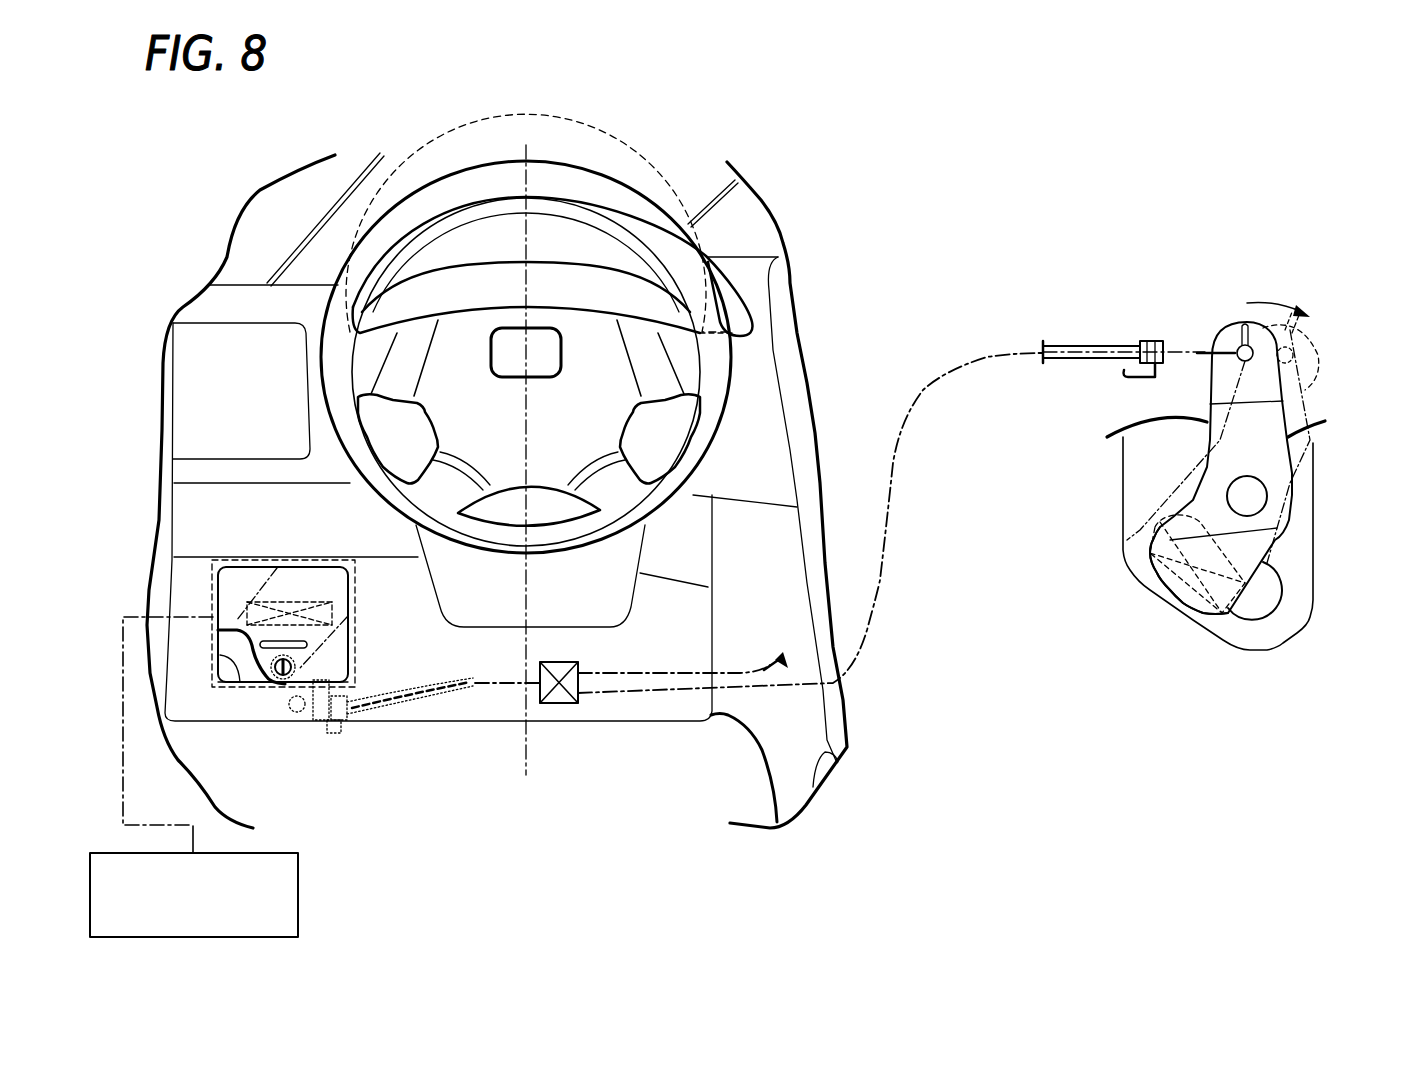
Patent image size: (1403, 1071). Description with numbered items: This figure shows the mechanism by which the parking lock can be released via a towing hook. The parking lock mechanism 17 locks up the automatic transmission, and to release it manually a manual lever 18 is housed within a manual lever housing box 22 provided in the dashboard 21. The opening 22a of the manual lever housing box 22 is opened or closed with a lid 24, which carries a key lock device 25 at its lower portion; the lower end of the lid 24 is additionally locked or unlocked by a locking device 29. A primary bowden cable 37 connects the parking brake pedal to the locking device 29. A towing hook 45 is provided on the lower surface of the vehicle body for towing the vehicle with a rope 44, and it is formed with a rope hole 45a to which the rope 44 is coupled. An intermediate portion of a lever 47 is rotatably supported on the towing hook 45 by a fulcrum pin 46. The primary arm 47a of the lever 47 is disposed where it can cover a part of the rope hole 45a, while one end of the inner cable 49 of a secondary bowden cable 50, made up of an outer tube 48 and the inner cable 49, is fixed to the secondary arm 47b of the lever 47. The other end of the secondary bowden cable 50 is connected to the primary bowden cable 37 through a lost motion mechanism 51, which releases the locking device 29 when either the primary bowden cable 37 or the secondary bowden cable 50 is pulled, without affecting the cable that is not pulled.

The parking lock mechanism 17 is at (298, 893).
The manual lever 18 is at (247, 634).
The dashboard 21 is at (450, 735).
The manual lever housing box 22 is at (205, 590).
The opening 22a is at (237, 684).
The lid 24 is at (327, 587).
The key lock device 25 is at (322, 665).
The locking device 29 is at (363, 688).
The primary bowden cable 37 is at (730, 673).
The rope 44 is at (1267, 622).
The towing hook 45 is at (1322, 552).
The rope hole 45a is at (1178, 606).
The fulcrum pin 46 is at (1264, 497).
The lever 47 is at (1302, 403).
The primary arm 47a is at (1176, 562).
The secondary arm 47b is at (1282, 356).
The outer tube 48 is at (1089, 346).
The inner cable 49 is at (1199, 351).
The secondary bowden cable 50 is at (1139, 299).
The lost motion mechanism 51 is at (557, 705).